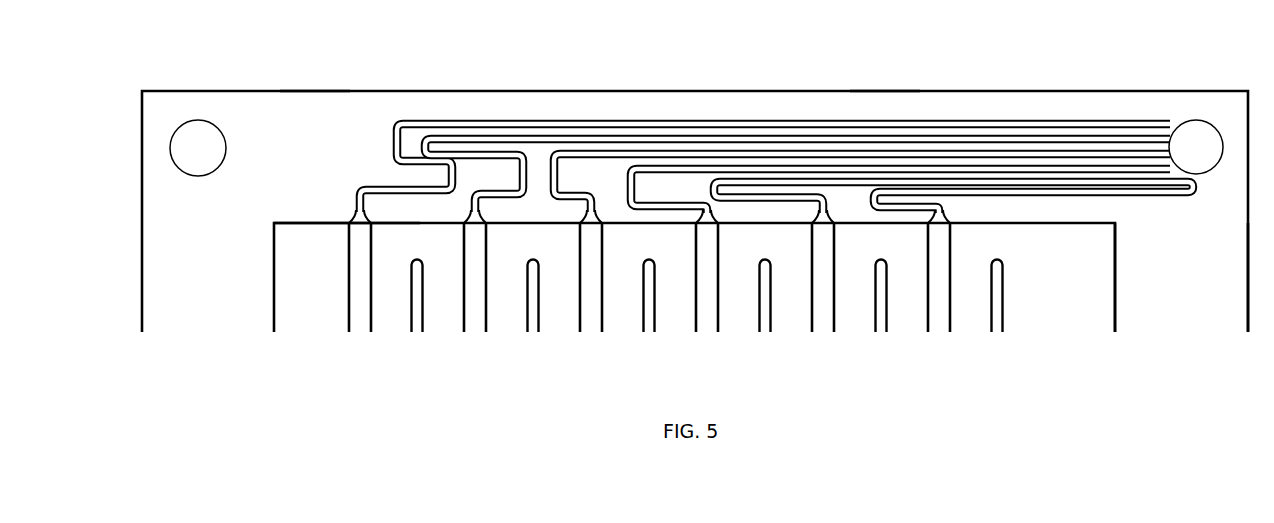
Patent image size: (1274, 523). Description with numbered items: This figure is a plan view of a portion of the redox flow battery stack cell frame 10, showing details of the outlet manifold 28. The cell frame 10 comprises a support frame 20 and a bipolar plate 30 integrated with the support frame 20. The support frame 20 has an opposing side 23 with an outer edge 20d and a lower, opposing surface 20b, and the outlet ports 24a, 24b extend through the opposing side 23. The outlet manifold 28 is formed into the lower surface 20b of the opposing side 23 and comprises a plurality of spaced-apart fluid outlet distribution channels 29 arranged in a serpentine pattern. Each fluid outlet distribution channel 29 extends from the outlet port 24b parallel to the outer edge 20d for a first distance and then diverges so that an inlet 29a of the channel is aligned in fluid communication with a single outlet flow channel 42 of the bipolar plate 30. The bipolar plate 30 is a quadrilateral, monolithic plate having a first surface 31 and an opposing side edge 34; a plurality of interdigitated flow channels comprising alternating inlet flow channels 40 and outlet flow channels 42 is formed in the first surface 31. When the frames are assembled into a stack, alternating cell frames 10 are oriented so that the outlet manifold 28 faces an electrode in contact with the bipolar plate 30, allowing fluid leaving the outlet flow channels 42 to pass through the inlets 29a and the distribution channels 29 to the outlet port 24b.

The redox flow battery stack cell frame 10 is at (690, 55).
The support frame 20 is at (1023, 97).
The opposing surface 20b is at (1190, 296).
The outer edge 20d is at (875, 90).
The opposing side 23 is at (313, 103).
The outlet port 24a is at (1197, 147).
The outlet port 24b is at (200, 135).
The outlet manifold 28 is at (541, 112).
The fluid outlet distribution channels 29 is at (888, 193).
The inlet of the fluid outlet distribution channel 29a is at (477, 223).
The bipolar plate 30 is at (272, 307).
The first surface 31 is at (1061, 296).
The opposing side edge 34 is at (313, 222).
The inlet flow channels 40 is at (417, 335).
The outlet flow channels 42 is at (357, 331).